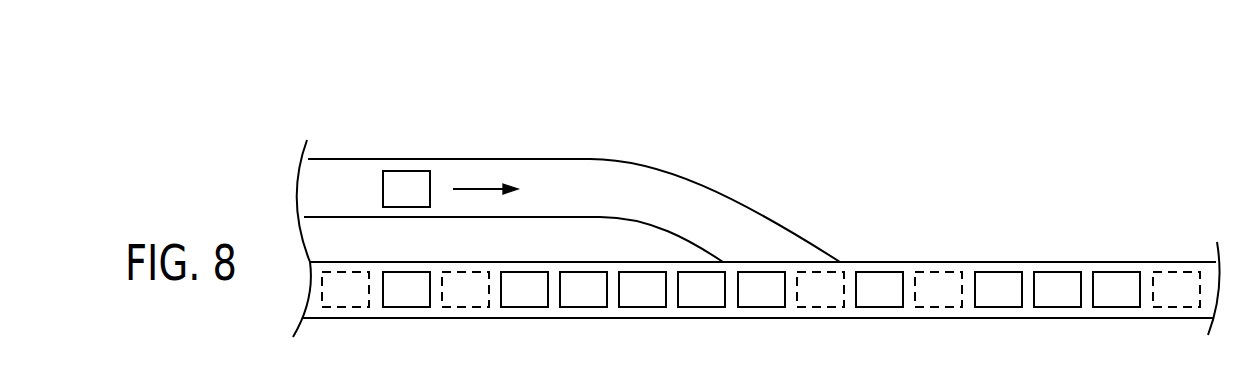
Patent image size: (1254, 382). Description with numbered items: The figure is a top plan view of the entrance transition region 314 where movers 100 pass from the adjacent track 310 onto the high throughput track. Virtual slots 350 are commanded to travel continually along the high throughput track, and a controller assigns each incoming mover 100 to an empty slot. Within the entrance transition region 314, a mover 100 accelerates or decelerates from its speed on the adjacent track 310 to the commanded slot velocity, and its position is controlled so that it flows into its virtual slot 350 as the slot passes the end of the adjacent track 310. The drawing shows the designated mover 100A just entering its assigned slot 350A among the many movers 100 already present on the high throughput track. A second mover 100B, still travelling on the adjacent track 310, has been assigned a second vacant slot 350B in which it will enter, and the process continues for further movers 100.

The mover 100 is at (406, 283).
The designated mover 100A is at (763, 280).
The second mover 100B is at (405, 172).
The adjacent track 310 is at (588, 159).
The entrance transition region 314 is at (832, 92).
The virtual slot 350 is at (464, 293).
The assigned slot 350A is at (763, 308).
The second vacant slot 350B is at (347, 293).